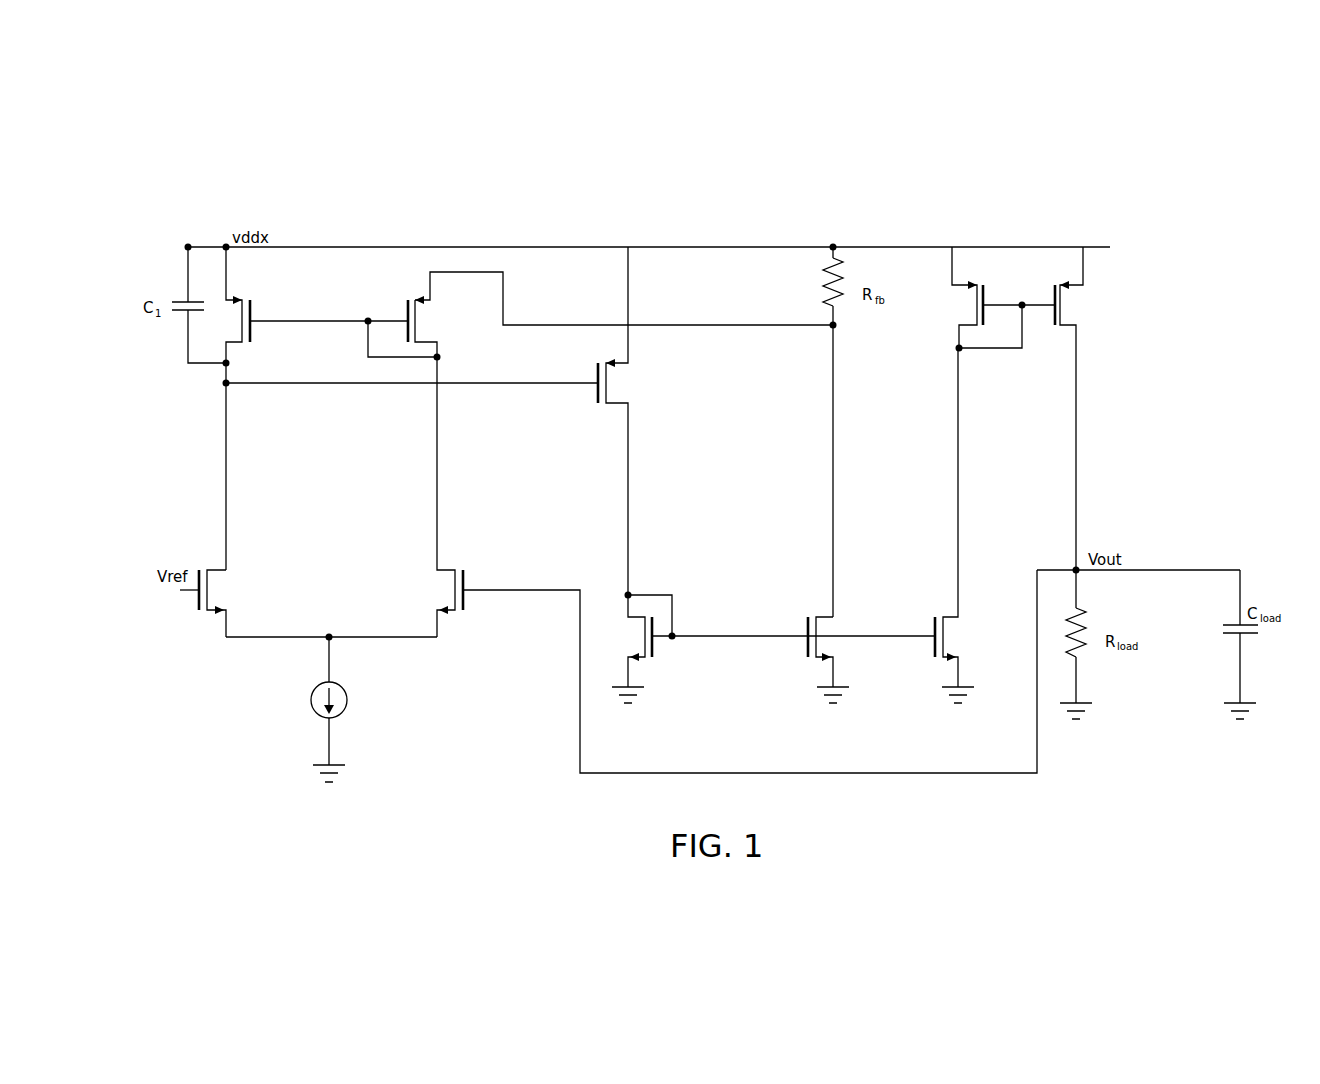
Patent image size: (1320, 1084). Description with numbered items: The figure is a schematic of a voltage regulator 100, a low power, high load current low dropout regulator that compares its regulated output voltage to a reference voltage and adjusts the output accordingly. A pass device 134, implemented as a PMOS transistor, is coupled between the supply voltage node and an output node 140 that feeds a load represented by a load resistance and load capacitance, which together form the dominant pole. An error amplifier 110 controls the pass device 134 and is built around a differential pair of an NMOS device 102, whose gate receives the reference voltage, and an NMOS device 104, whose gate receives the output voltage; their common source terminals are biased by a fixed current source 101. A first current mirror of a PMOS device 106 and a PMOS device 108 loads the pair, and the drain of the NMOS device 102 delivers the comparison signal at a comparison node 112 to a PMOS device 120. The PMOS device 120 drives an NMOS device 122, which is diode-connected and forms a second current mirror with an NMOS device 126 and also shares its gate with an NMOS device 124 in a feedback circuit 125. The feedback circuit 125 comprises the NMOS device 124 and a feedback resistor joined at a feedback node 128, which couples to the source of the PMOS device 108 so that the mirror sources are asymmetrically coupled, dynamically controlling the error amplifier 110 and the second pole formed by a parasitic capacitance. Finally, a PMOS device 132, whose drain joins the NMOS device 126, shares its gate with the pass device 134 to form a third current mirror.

The voltage regulator 100 is at (211, 183).
The current source 101 is at (313, 705).
The NMOS device 102 is at (212, 603).
The NMOS device 104 is at (729, 565).
The PMOS device 106 is at (306, 305).
The PMOS device 108 is at (620, 314).
The error amplifier 110 is at (334, 516).
The comparison node 112 is at (226, 385).
The PMOS device 120 is at (628, 421).
The NMOS device 122 is at (773, 648).
The NMOS device 124 is at (843, 660).
The feedback circuit 125 is at (820, 400).
The NMOS device 126 is at (960, 525).
The feedback node 128 is at (834, 327).
The PMOS device 132 is at (996, 297).
The pass device 134 is at (1081, 408).
The output node 140 is at (1075, 568).